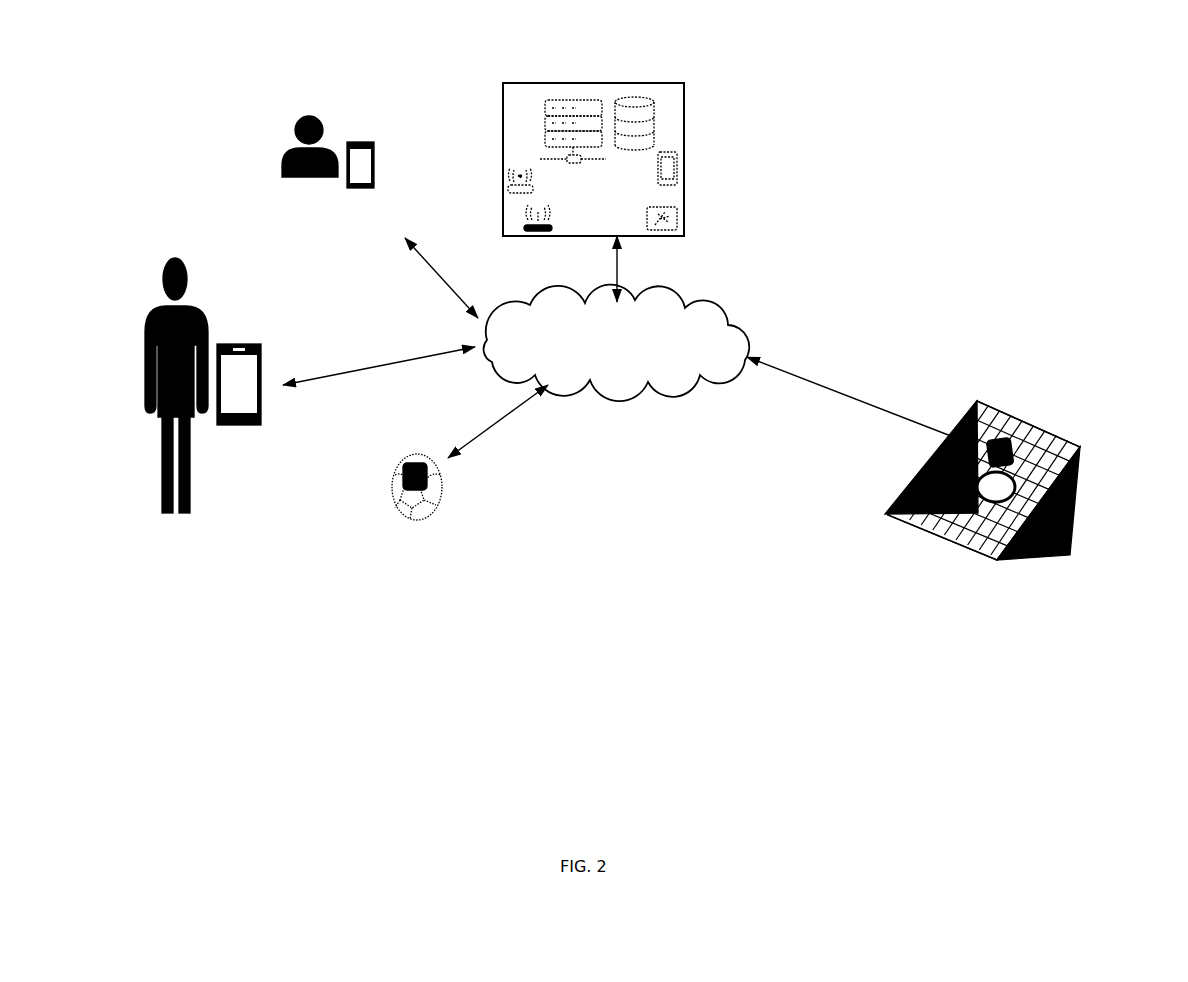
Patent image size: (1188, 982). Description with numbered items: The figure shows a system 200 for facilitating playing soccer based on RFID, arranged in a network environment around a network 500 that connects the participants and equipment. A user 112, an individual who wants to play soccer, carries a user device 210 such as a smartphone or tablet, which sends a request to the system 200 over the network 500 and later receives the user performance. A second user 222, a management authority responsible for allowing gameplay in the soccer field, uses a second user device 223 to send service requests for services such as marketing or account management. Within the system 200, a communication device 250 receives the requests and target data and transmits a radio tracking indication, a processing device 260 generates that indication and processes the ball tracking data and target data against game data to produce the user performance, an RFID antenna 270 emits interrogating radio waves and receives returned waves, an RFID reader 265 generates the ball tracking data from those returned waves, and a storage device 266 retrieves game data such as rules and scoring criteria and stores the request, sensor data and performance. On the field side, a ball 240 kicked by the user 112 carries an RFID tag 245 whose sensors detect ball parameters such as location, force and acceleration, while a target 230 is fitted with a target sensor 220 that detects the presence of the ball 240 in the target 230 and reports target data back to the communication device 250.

The user 112 is at (176, 258).
The user device 210 is at (238, 341).
The second user 222 is at (311, 116).
The second user device 223 is at (361, 141).
The system 200 is at (630, 228).
The storage device 266 is at (653, 103).
The RFID antenna 270 is at (513, 188).
The communication device 250 is at (528, 232).
The processing device 260 is at (678, 168).
The RFID reader 265 is at (678, 218).
The network 500 is at (617, 343).
The ball 240 is at (417, 522).
The RFID tag 245 is at (405, 463).
The target sensor 220 is at (1003, 428).
The target 230 is at (1078, 500).